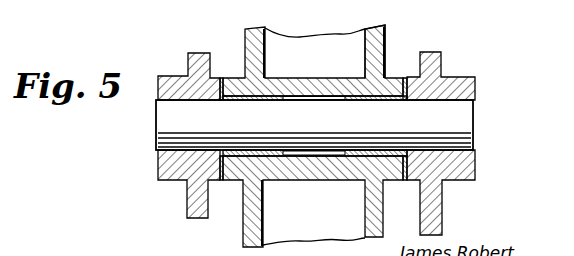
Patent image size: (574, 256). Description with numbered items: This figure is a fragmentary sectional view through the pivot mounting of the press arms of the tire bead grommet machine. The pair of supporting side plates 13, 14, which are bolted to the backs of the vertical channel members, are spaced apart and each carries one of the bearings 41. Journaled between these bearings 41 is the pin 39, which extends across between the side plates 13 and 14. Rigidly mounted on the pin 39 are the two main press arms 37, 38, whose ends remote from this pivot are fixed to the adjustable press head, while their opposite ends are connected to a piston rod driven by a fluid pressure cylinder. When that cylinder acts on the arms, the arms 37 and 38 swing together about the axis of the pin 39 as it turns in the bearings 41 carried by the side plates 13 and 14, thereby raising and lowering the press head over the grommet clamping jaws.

The supporting side plate 13 is at (442, 57).
The supporting side plate 14 is at (196, 67).
The main press arm 37 is at (386, 33).
The main press arm 38 is at (246, 36).
The pin 39 is at (452, 120).
The bearings 41 is at (163, 160).